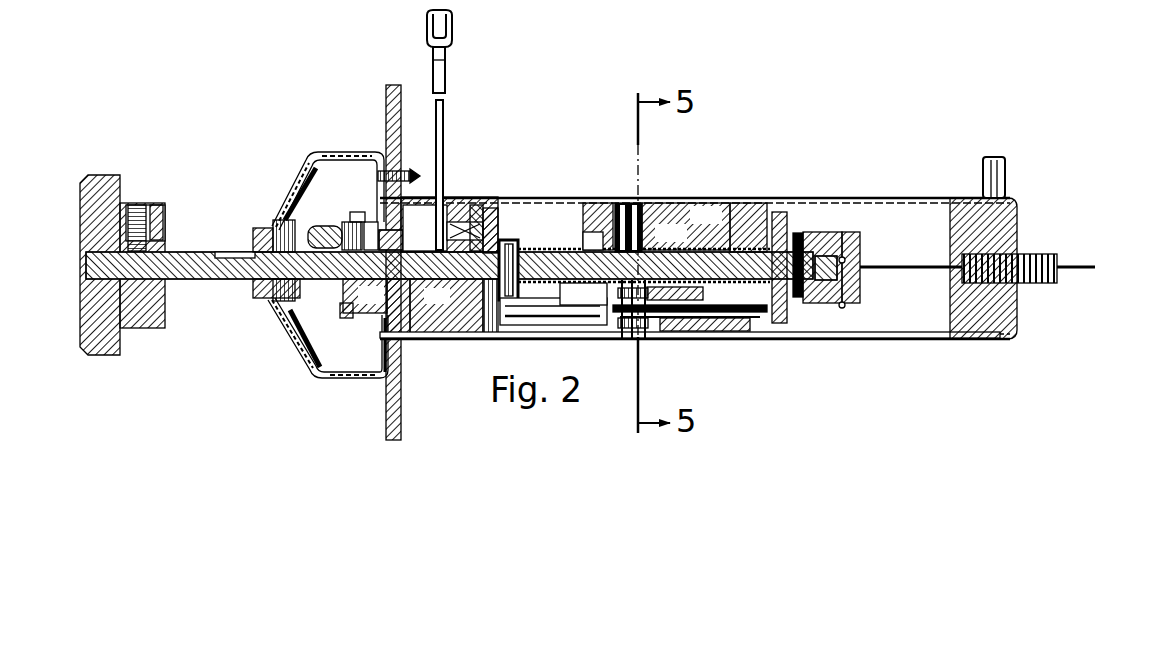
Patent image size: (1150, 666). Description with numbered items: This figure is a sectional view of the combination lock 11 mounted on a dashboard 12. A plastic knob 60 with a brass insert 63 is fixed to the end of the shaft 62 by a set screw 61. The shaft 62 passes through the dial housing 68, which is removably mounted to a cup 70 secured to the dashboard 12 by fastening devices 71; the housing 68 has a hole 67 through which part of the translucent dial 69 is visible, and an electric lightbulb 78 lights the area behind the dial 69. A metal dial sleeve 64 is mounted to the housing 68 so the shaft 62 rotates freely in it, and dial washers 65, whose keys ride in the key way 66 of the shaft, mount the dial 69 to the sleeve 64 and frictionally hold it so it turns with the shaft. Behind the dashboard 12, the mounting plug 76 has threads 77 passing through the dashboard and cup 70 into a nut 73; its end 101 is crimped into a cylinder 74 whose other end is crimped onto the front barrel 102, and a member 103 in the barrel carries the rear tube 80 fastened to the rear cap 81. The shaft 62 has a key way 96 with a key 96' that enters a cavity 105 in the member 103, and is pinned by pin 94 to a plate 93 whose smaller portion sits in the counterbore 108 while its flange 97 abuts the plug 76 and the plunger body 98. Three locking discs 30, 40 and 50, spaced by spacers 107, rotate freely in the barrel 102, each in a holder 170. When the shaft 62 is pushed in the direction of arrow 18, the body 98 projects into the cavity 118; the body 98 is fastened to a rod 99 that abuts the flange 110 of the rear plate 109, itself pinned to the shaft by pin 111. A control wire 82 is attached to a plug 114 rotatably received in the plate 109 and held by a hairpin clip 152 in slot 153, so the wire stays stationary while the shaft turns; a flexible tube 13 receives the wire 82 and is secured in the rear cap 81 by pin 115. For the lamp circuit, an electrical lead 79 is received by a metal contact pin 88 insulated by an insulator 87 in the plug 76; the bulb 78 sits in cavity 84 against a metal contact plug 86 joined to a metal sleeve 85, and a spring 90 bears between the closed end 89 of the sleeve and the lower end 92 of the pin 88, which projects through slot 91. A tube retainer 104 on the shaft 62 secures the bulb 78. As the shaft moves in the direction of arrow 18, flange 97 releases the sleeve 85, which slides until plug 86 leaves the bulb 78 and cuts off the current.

The combination lock 11 is at (243, 378).
The dashboard 12 is at (392, 85).
The flexible tube 13 is at (1040, 283).
The arrow 18 is at (72, 262).
The locking disc 30 is at (632, 205).
The locking disc 40 is at (671, 234).
The locking disc 50 is at (686, 226).
The plastic knob 60 is at (86, 355).
The set screw 61 is at (155, 213).
The shaft 62 is at (235, 280).
The brass insert 63 is at (140, 295).
The metal dial sleeve 64 is at (258, 298).
The dial washers 65 is at (283, 215).
The key way 66 is at (256, 232).
The hole 67 is at (290, 200).
The dial housing 68 is at (298, 345).
The dial 69 is at (312, 350).
The cup 70 is at (386, 370).
The fastening devices 71 is at (382, 165).
The nut 73 is at (348, 378).
The cylinder 74 is at (530, 340).
The mounting plug 76 is at (455, 334).
The threads 77 is at (345, 318).
The electric lightbulb 78 is at (328, 226).
The electrical lead 79 is at (452, 25).
The rear tube 80 is at (905, 340).
The rear cap 81 is at (1010, 339).
The control wire 82 is at (905, 267).
The cavity 84 is at (358, 222).
The metal sleeve 85 is at (405, 334).
The metal contact plug 86 is at (365, 296).
The insulator 87 is at (436, 180).
The metal contact pin 88 is at (466, 198).
The closed metal end 89 is at (480, 205).
The spring 90 is at (480, 225).
The slot 91 is at (405, 183).
The lower end 92 is at (454, 306).
The plate 93 is at (490, 208).
The pin 94 is at (512, 240).
The key way 96 is at (553, 302).
The key 96' is at (586, 325).
The flange 97 is at (448, 340).
The plunger body 98 is at (620, 338).
The rod 99 is at (655, 330).
The end 101 is at (475, 340).
The front barrel 102 is at (598, 230).
The member 103 is at (705, 203).
The tube retainer 104 is at (308, 160).
The cavity 105 is at (745, 215).
The spacers 107 is at (648, 210).
The counterbore 108 is at (595, 236).
The rear plate 109 is at (825, 303).
The flange 110 is at (778, 323).
The pin 111 is at (797, 297).
The plug 114 is at (822, 256).
The pin 115 is at (1005, 165).
The cavity 118 is at (700, 320).
The hairpin clip 152 is at (845, 305).
The slot 153 is at (850, 232).
The holder 170 is at (630, 340).